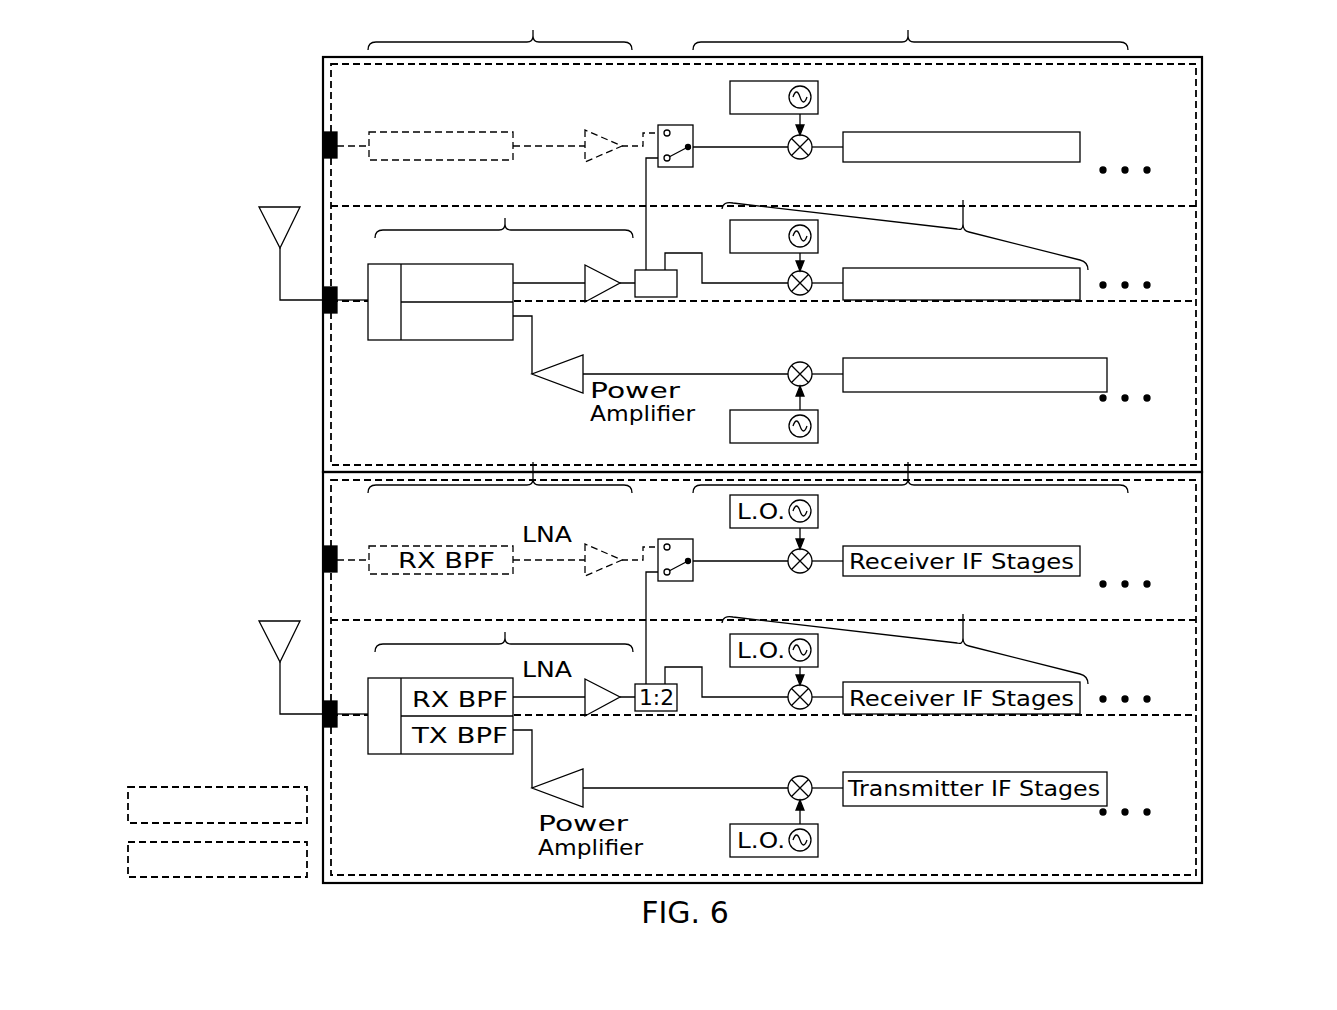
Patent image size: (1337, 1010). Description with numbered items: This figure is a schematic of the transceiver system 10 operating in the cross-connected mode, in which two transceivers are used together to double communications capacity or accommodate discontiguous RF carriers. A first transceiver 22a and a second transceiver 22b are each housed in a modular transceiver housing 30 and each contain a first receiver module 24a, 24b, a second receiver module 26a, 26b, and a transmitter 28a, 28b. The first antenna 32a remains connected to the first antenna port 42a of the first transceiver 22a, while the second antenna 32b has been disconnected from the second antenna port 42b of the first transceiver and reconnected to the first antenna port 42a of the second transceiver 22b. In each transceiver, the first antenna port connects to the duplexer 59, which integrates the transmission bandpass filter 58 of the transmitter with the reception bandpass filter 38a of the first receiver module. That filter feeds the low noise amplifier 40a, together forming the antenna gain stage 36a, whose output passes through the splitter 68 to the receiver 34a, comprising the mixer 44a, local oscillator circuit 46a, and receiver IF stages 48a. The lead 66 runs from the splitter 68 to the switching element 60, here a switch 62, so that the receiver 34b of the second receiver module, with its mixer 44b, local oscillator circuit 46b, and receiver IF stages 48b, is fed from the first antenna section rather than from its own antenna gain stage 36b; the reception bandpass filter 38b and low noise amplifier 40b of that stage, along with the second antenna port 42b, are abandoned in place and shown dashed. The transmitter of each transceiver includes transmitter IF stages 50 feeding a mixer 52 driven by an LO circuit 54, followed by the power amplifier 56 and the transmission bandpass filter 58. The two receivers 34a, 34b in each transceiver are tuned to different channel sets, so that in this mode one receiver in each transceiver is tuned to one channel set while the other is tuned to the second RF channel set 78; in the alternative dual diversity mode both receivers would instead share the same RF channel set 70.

The transceiver system 10 is at (1292, 190).
The first transceiver 22a is at (277, 581).
The second transceiver 22b is at (277, 144).
The first receiver module of the first transceiver 24a is at (1197, 649).
The first receiver module of the second transceiver 24b is at (1197, 233).
The second receiver module of the first transceiver 26a is at (1197, 522).
The second receiver module of the second transceiver 26b is at (1197, 108).
The transmitter of the first transceiver 28a is at (1197, 738).
The transmitter of the second transceiver 28b is at (1197, 325).
The modular transceiver housing 30 is at (1200, 405).
The first antenna 32a is at (266, 632).
The second antenna 32b is at (266, 218).
The receiver portion of the first receiver module 34a is at (905, 221).
The receiver portion of the second receiver module 34b is at (910, 26).
The antenna gain stage of the first receiver module 36a is at (504, 205).
The antenna gain stage of the second receiver module 36b is at (500, 26).
The reception bandpass filter of the first receiver module 38a is at (455, 262).
The reception bandpass filter of the second receiver module 38b is at (455, 130).
The low noise amplifier of the first receiver module 40a is at (598, 269).
The low noise amplifier of the second receiver module 40b is at (598, 131).
The first antenna port 42a is at (338, 310).
The second antenna port 42b is at (340, 143).
The mixer of the first receiver 44a is at (790, 278).
The mixer of the second receiver 44b is at (799, 160).
The local oscillator circuit of the first receiver 46a is at (730, 228).
The local oscillator circuit of the second receiver 46b is at (818, 103).
The receiver IF stages of the first receiver 48a is at (900, 268).
The receiver IF stages of the second receiver 48b is at (956, 132).
The transmitter IF stages 50 is at (878, 358).
The transmitter mixer 52 is at (793, 365).
The transmitter LO circuit 54 is at (818, 420).
The power amplifier 56 is at (583, 374).
The transmission bandpass filter 58 is at (453, 340).
The duplexer 59 is at (410, 365).
The switching element 60 is at (658, 122).
The switch 62 is at (694, 126).
The lead 66 is at (646, 192).
The splitter 68 is at (653, 297).
The RF channel set 70 is at (235, 787).
The second RF channel set 78 is at (190, 878).